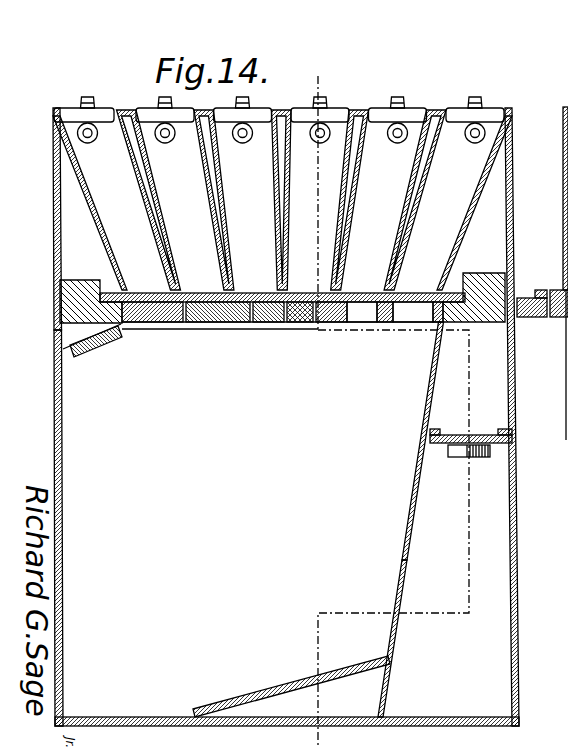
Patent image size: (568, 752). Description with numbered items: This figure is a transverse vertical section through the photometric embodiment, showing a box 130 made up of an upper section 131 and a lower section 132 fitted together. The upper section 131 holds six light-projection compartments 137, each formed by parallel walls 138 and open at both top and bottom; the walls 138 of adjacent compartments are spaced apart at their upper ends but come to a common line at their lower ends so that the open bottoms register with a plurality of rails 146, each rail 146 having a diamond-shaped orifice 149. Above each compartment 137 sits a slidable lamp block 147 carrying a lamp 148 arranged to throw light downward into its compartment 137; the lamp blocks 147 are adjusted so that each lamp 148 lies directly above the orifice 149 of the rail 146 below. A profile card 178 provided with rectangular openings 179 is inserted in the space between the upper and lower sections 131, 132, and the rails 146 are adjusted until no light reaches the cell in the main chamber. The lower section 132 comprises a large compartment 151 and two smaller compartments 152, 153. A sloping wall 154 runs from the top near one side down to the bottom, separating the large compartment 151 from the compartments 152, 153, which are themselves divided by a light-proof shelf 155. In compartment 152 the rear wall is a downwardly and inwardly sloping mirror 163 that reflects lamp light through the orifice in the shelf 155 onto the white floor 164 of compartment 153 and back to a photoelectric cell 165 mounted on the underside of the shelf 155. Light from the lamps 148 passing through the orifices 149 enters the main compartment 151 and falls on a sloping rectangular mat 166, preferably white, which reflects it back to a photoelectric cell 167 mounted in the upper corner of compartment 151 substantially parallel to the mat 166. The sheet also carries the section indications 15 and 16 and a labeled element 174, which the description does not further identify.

The box 130 is at (52, 242).
The upper section 131 is at (52, 203).
The lower section 132 is at (52, 394).
The light-projection compartment 137 is at (113, 126).
The parallel walls 138 is at (140, 206).
The rail 146 is at (207, 323).
The lamp block 147 is at (68, 108).
The lamp 148 is at (80, 138).
The diamond-shaped orifice 149 is at (150, 294).
The large compartment 151 is at (281, 413).
The compartment 152 is at (475, 395).
The compartment 153 is at (404, 594).
The sloping wall 154 is at (408, 512).
The light-proof shelf 155 is at (438, 446).
The mirror 163 is at (454, 375).
The white floor 164 is at (457, 699).
The photoelectric cell 165 is at (447, 458).
The sloping rectangular mat 166 is at (270, 690).
The photoelectric cell 167 is at (93, 355).
The valve stem 174 is at (392, 98).
The profile card 178 is at (360, 305).
The rectangular openings 179 is at (292, 323).
The section line 15- 15 is at (337, 83).
The section line 16- 16 is at (303, 742).